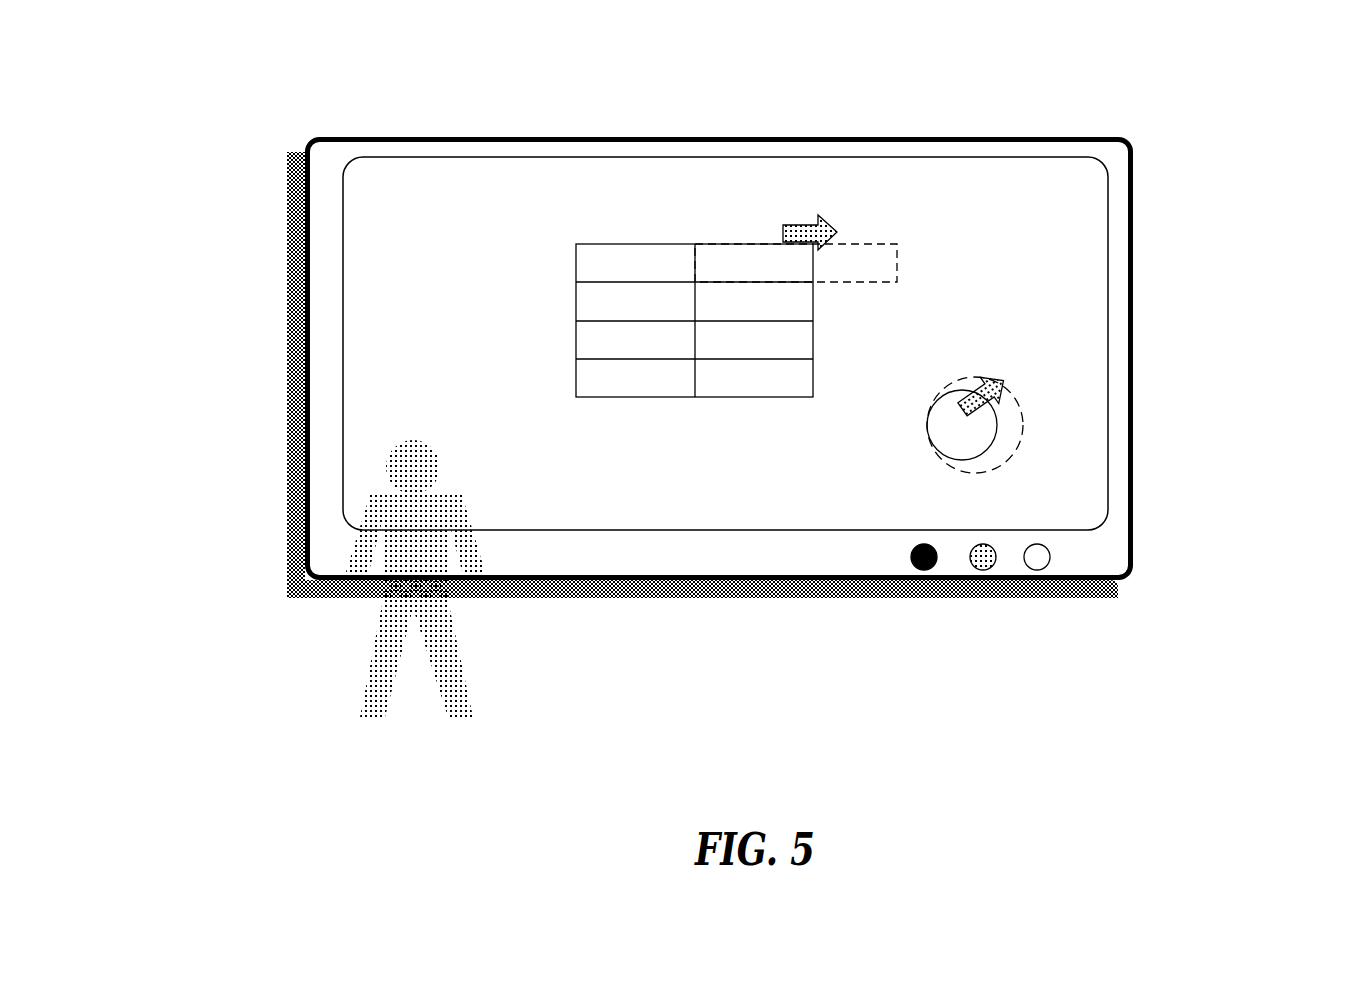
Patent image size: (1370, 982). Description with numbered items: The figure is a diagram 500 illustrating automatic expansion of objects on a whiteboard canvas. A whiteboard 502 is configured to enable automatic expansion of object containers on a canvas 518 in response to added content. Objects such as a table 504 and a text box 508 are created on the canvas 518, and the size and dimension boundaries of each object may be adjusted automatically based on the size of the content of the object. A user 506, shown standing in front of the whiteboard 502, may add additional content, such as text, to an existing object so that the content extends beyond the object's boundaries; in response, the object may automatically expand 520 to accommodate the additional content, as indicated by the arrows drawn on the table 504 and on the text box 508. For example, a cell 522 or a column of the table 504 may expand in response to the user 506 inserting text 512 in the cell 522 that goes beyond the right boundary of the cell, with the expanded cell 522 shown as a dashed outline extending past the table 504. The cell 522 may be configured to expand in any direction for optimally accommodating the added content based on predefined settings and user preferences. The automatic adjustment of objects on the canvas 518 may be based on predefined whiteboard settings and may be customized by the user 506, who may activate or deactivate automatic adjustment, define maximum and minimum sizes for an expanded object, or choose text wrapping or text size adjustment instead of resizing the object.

The diagram 500 is at (1302, 73).
The whiteboard 502 is at (998, 130).
The table 504 is at (679, 400).
The user 506 is at (452, 722).
The text box 508 is at (980, 382).
The text 512 is at (757, 252).
The canvas 518 is at (503, 178).
The automatic expansion 520 is at (820, 212).
The cell 522 is at (884, 243).